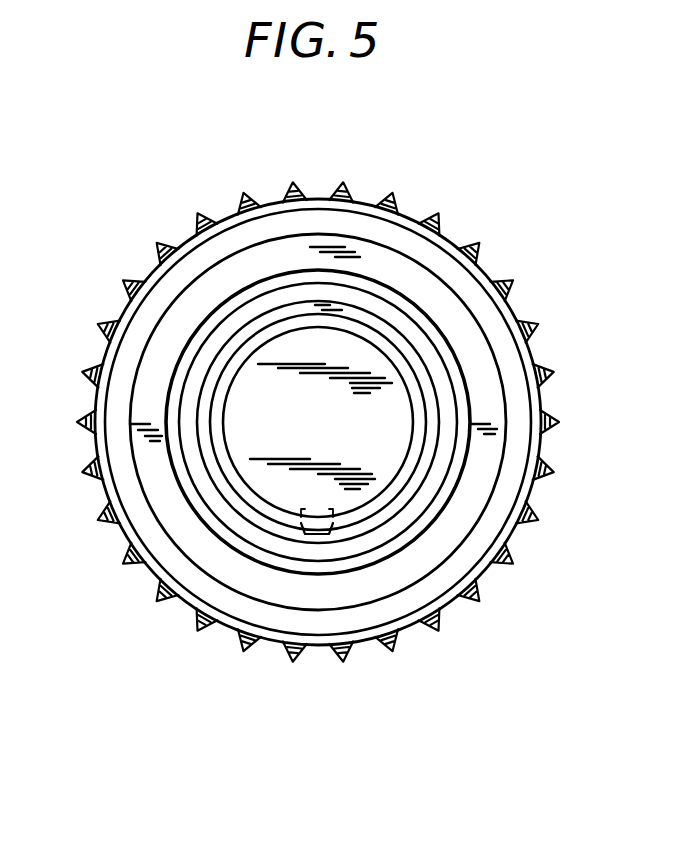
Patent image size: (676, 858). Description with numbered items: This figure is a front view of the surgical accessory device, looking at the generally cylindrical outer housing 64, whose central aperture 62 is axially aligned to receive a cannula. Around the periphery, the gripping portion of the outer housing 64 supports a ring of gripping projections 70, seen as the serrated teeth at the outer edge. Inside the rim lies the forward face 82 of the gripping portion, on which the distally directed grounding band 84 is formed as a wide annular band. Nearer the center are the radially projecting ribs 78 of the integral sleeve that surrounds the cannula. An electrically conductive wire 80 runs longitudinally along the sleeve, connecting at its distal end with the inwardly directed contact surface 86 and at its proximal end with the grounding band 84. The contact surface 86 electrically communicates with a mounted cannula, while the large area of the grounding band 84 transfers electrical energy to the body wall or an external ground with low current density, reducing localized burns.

The central aperture 62 is at (285, 352).
The outer housing 64 is at (321, 420).
The gripping projections 70 is at (481, 601).
The radially projecting ribs 78 is at (397, 487).
The electrically conductive wire 80 is at (323, 528).
The forward face 82 is at (205, 520).
The grounding band 84 is at (167, 522).
The contact surface 86 is at (315, 515).